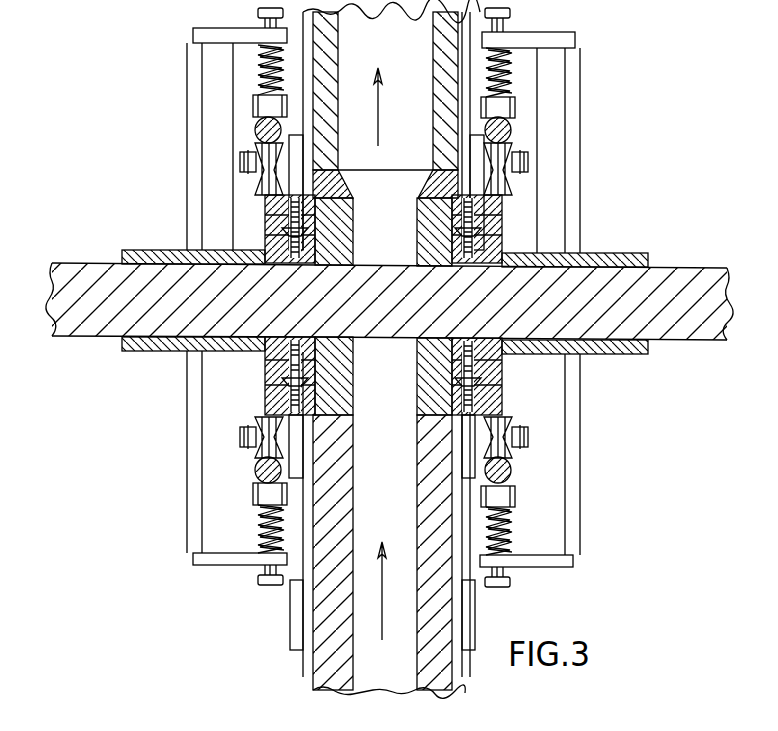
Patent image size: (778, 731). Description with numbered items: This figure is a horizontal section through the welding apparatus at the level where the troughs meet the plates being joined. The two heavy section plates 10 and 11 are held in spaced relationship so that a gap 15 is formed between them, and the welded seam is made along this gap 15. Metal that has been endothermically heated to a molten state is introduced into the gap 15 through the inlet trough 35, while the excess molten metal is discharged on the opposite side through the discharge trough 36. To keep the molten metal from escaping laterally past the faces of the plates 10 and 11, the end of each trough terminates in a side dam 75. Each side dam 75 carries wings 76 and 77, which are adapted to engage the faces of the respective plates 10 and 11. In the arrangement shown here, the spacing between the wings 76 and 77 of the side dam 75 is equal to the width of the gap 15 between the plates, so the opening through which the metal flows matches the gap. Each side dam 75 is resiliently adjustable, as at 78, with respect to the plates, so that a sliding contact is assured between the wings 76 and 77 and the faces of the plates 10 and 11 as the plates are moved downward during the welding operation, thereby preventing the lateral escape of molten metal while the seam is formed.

The plate 10 is at (85, 276).
The plate 11 is at (671, 280).
The gap 15 is at (354, 288).
The inlet trough 35 is at (316, 687).
The discharge trough 36 is at (438, 96).
The side dam 75 is at (266, 238).
The wing 76 is at (160, 250).
The wing 77 is at (621, 254).
The resilient adjustment 78 is at (258, 72).